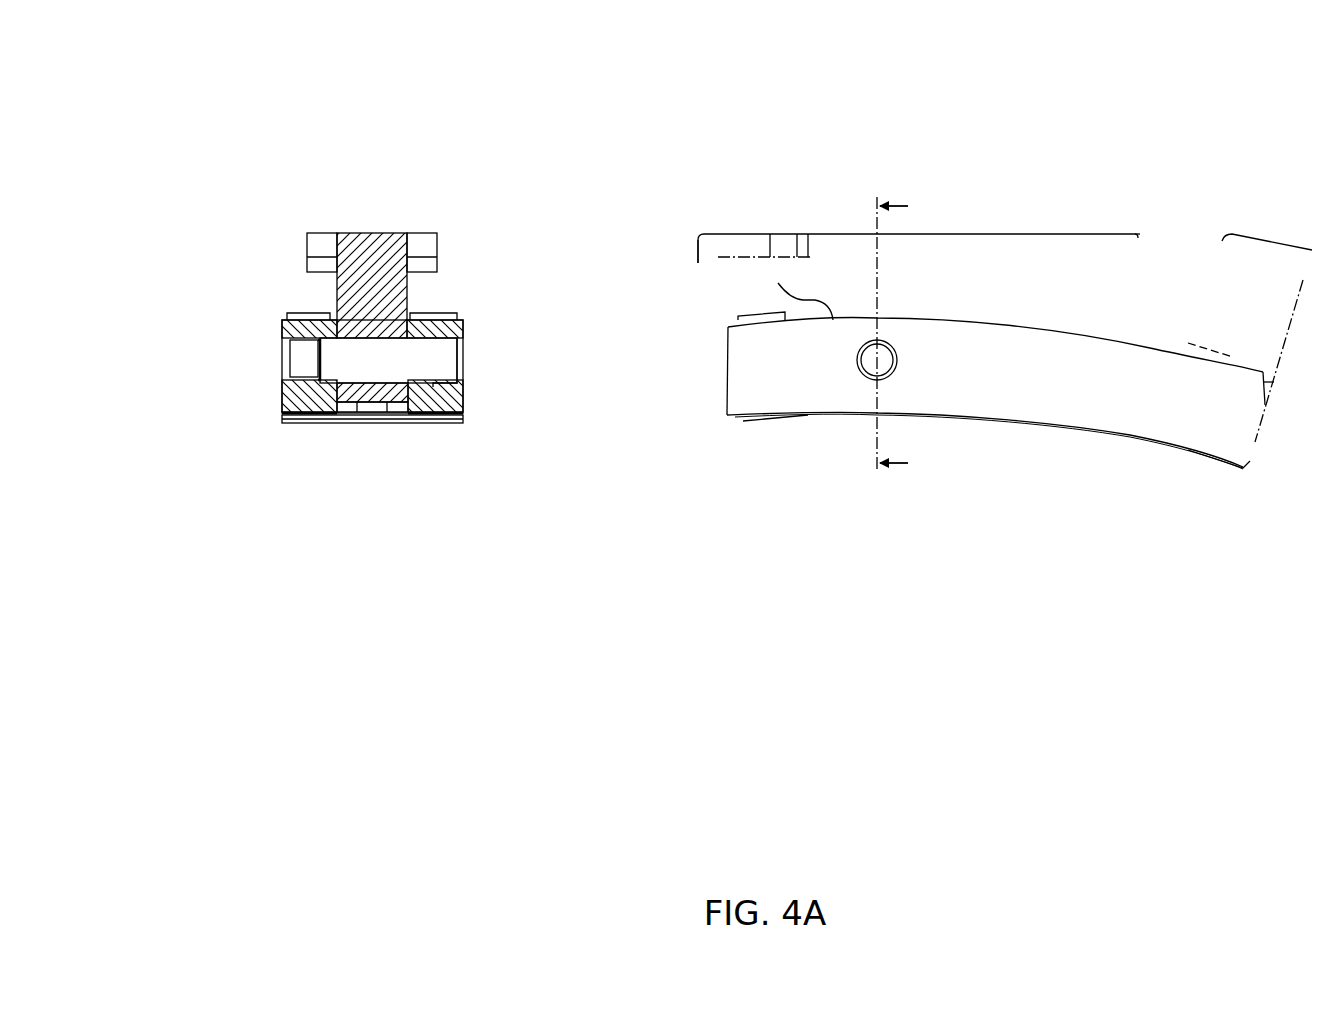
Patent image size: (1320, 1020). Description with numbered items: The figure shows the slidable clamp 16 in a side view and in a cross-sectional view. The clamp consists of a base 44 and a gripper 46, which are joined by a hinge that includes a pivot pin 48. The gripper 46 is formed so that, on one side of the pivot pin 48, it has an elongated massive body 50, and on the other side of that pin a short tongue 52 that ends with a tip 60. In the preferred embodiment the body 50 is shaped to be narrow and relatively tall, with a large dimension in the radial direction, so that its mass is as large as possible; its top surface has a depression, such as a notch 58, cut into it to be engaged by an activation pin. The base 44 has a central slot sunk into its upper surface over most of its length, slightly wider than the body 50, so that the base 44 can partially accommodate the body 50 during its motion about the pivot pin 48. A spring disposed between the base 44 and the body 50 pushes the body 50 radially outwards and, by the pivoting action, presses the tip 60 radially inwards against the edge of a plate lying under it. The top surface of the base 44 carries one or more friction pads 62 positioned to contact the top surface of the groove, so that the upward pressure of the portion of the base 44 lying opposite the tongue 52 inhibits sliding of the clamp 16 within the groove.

The slidable clamp 16 is at (618, 108).
The base 44 is at (283, 407).
The gripper 46 is at (372, 233).
The pivot pin 48 is at (288, 352).
The elongated massive body 50 is at (1243, 263).
The short tongue 52 is at (735, 233).
The notch 58 is at (1153, 258).
The tip 60 is at (697, 255).
The friction pads 62 is at (743, 318).